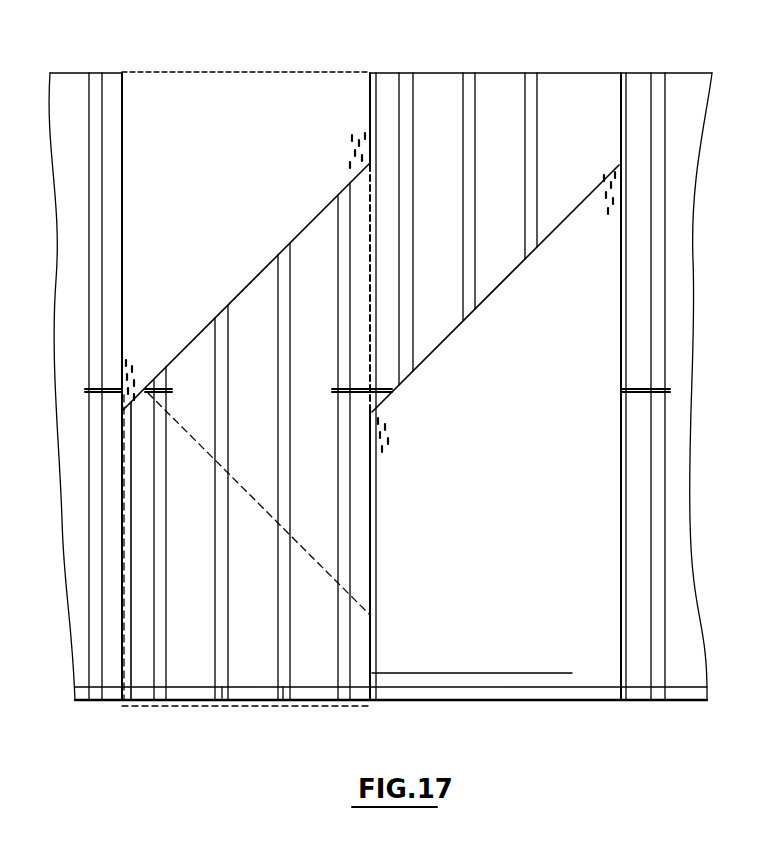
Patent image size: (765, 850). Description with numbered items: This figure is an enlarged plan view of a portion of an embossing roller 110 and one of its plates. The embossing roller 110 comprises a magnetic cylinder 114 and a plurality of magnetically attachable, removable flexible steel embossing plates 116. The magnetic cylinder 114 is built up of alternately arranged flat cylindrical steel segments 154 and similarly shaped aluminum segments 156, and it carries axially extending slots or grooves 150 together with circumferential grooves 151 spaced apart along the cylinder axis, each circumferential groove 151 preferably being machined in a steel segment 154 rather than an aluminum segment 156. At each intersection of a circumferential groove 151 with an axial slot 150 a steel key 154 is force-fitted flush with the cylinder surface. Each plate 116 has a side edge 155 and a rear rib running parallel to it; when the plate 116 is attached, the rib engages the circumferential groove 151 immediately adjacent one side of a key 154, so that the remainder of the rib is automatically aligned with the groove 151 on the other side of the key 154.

The embossing roller 110 is at (700, 73).
The magnetic cylinder 114 is at (666, 73).
The flexible steel embossing plate 116 is at (188, 347).
The axial slot or groove 150 is at (90, 393).
The circumferential groove 151 is at (372, 73).
The steel key 154 is at (545, 78).
The side edge 155 is at (121, 76).
The aluminum segment 156 is at (283, 703).